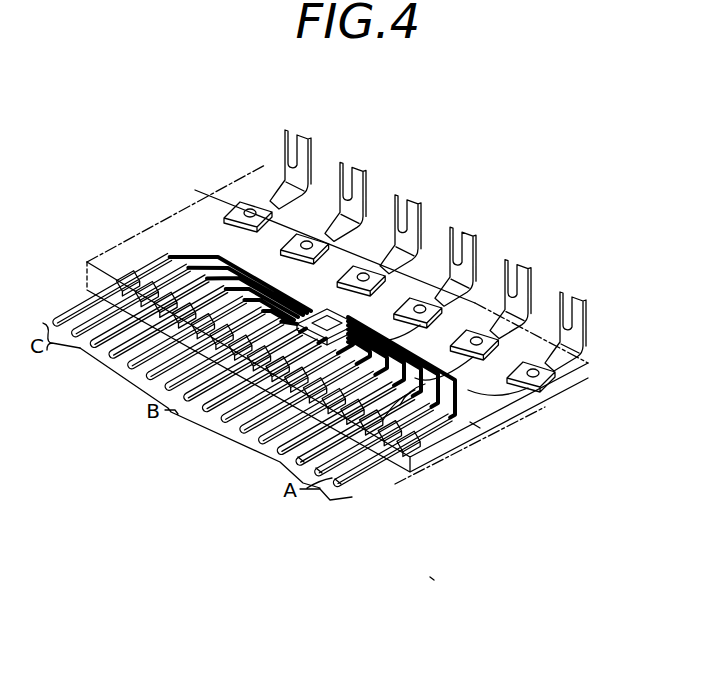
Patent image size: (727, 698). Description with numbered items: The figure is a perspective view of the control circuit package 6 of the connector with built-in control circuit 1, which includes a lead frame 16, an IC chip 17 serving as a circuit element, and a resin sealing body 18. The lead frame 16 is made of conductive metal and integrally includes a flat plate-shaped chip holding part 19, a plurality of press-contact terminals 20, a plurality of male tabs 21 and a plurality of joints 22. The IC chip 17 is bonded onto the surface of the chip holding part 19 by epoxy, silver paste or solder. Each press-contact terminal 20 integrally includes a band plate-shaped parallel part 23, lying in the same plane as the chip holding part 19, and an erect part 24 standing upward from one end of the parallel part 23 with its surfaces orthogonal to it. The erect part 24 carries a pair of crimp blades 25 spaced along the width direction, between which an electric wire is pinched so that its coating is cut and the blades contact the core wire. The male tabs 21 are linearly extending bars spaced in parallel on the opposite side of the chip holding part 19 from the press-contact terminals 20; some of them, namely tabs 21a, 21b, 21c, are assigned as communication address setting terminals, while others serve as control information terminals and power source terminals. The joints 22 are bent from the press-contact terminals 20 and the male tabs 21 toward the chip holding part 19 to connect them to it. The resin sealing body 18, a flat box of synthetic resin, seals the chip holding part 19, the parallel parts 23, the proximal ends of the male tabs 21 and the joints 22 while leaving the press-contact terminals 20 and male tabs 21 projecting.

The electronic component unit 1 is at (435, 583).
The control circuit package 6 is at (443, 463).
The lead frame 16 is at (470, 424).
The IC chip 17 is at (318, 312).
The resin sealing body 18 is at (500, 437).
The chip holding part 19 is at (265, 350).
The press-contact terminal 20 is at (433, 257).
The male tab 21 is at (138, 357).
The male tab (communication address setting terminal) 21a is at (348, 486).
The male tab (communication address setting terminal) 21b is at (330, 490).
The male tab (communication address setting terminal) 21c is at (322, 490).
The joint 22 is at (520, 385).
The parallel part 23 is at (250, 205).
The erect part 24 is at (439, 228).
The crimp blade 25 is at (294, 131).